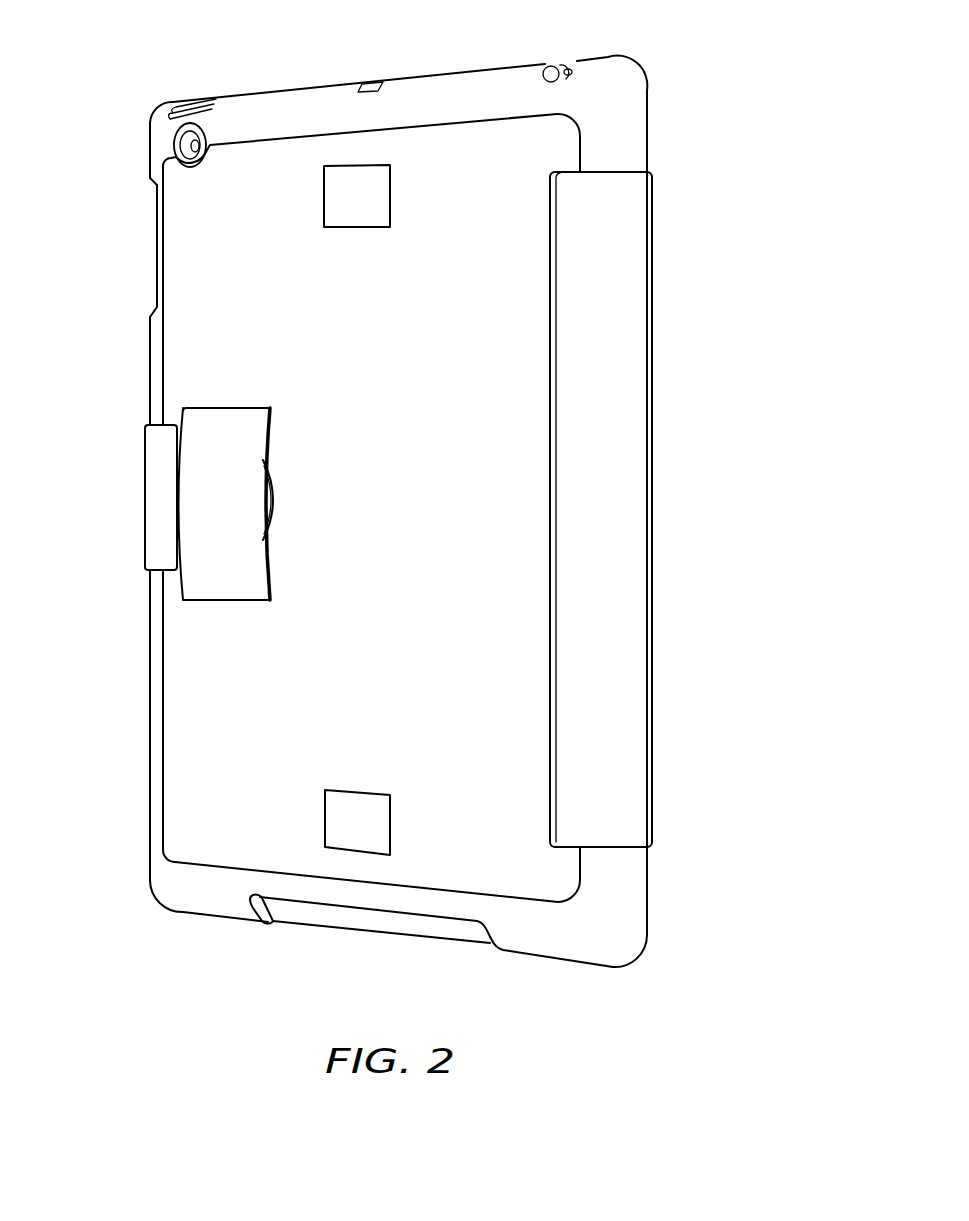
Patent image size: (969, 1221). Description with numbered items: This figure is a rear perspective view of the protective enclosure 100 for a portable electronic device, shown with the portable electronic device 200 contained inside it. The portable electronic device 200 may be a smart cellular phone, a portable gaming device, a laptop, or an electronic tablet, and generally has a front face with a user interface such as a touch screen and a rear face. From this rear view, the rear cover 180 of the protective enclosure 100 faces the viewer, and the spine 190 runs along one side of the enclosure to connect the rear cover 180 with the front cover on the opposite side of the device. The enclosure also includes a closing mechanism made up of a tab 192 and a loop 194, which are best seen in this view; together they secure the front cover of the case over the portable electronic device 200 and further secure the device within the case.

The protective enclosure 100 is at (140, 343).
The rear cover 180 is at (225, 712).
The spine 190 is at (653, 557).
The tab 192 is at (145, 535).
The loop 194 is at (213, 477).
The portable electronic device 200 is at (353, 927).